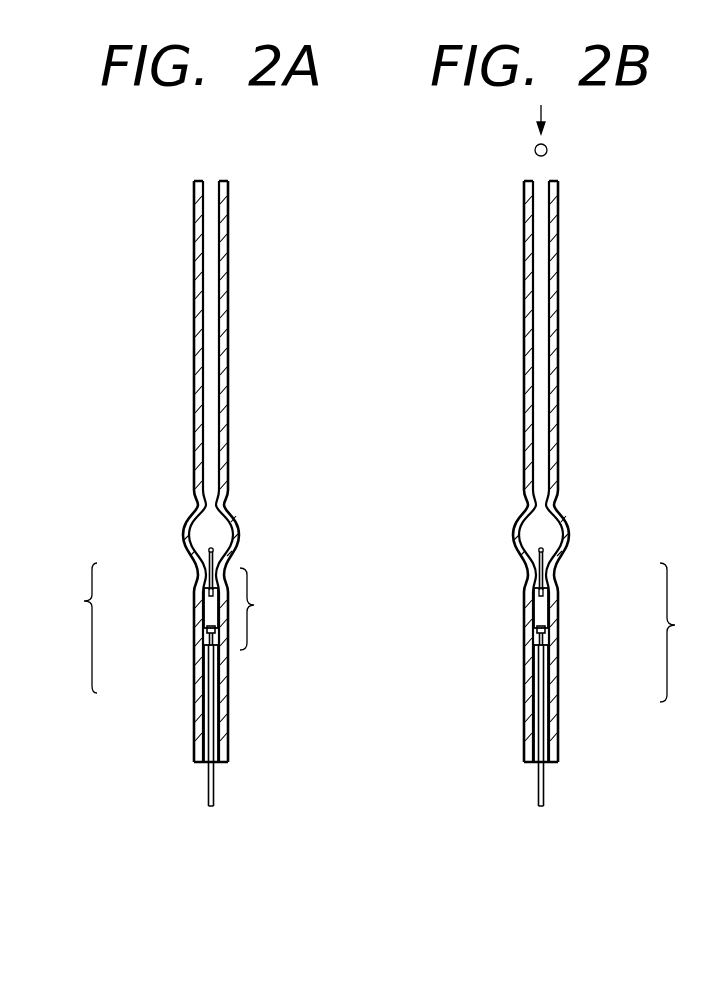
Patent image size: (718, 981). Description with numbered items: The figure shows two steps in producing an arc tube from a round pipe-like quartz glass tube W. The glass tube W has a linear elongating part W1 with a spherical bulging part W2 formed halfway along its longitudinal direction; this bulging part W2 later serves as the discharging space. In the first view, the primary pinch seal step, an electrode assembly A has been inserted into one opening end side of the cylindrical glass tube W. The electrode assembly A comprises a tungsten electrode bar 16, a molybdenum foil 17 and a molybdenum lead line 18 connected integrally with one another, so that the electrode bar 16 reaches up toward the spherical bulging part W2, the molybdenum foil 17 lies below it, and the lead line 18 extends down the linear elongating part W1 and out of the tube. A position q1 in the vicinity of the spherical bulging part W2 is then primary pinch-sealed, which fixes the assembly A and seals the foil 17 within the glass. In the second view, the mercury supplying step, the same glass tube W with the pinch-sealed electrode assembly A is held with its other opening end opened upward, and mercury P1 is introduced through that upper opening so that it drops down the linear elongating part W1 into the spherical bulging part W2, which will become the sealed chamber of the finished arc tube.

In FIG. 2A, the tungsten electrode bar 16 is at (198, 556).
In FIG. 2B, the tungsten electrode bar 16 is at (556, 560).
In FIG. 2A, the molybdenum foil 17 is at (212, 604).
In FIG. 2B, the molybdenum foil 17 is at (545, 607).
In FIG. 2A, the molybdenum lead line 18 is at (210, 664).
In FIG. 2B, the molybdenum lead line 18 is at (548, 677).
In FIG. 2A, the quartz glass tube W is at (208, 471).
In FIG. 2A, the linear elongating part W1 is at (252, 471).
In FIG. 2B, the linear elongating part W1 is at (541, 471).
In FIG. 2A, the spherical bulging part W2 is at (238, 532).
In FIG. 2B, the spherical bulging part W2 is at (568, 532).
In FIG. 2A, the electrode assembly A is at (79, 628).
In FIG. 2B, the electrode assembly A is at (677, 632).
In FIG. 2A, the primary pinch seal position q1 is at (262, 609).
In FIG. 2B, the mercury P1 is at (547, 151).